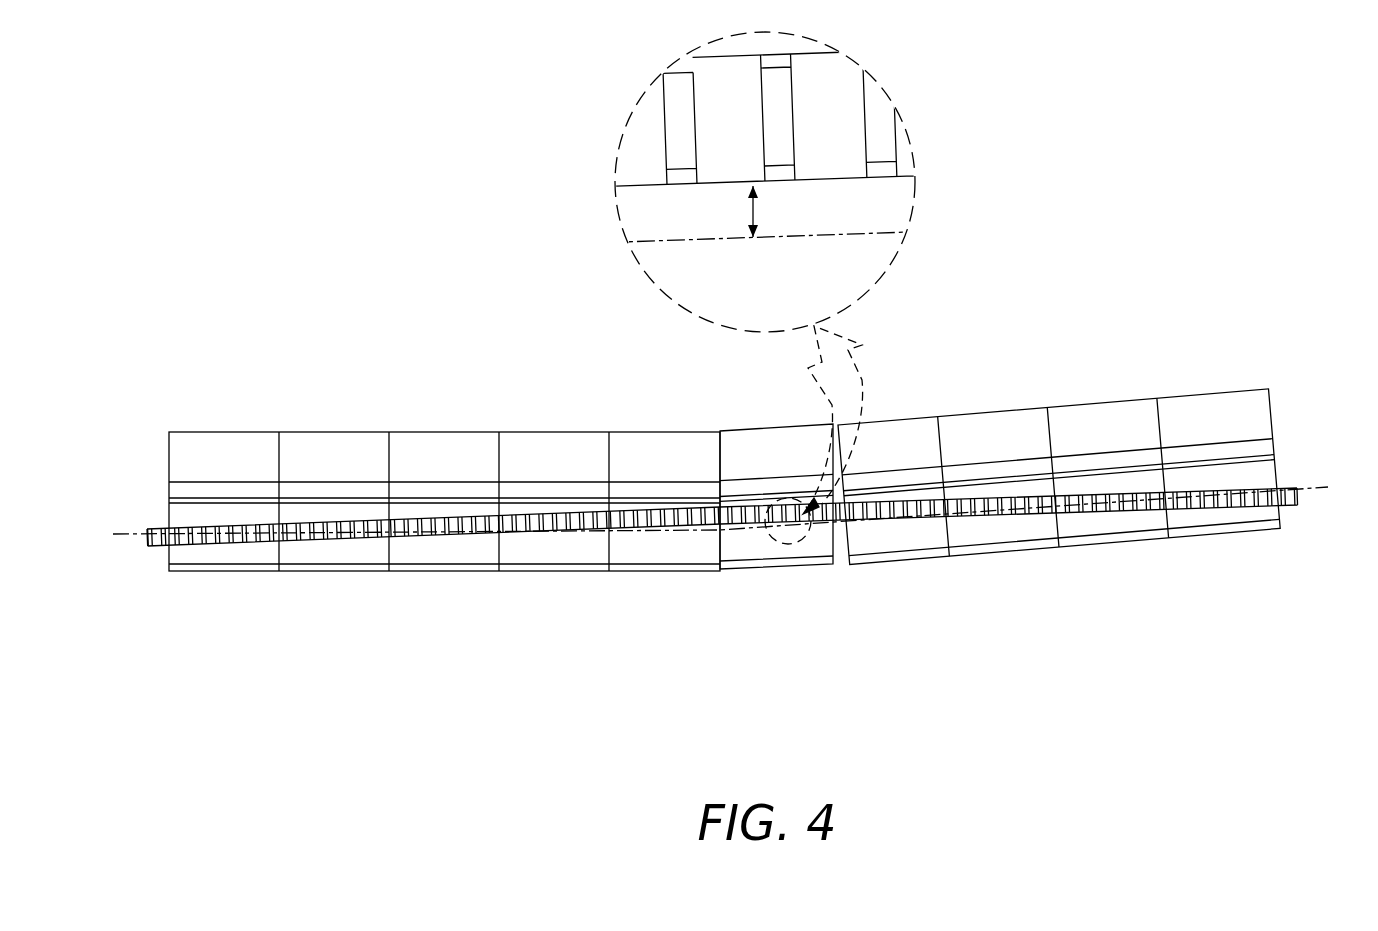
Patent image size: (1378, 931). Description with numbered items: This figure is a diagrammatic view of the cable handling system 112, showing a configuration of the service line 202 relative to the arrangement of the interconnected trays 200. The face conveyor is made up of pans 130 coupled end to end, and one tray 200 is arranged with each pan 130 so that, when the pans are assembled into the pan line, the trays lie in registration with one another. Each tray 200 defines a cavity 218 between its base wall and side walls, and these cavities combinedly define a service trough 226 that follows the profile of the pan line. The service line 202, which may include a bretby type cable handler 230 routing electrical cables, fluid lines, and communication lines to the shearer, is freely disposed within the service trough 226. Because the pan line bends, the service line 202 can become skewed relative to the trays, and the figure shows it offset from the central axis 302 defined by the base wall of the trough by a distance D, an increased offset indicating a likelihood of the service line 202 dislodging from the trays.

The cable handling system 112 is at (1282, 293).
The pan 130 is at (700, 439).
The interconnected trays 200 is at (700, 599).
The service line 202 is at (707, 184).
The cavity 218 is at (544, 545).
The service trough 226 is at (1214, 471).
The cable handler 230 is at (978, 521).
The central axis 302 is at (125, 533).